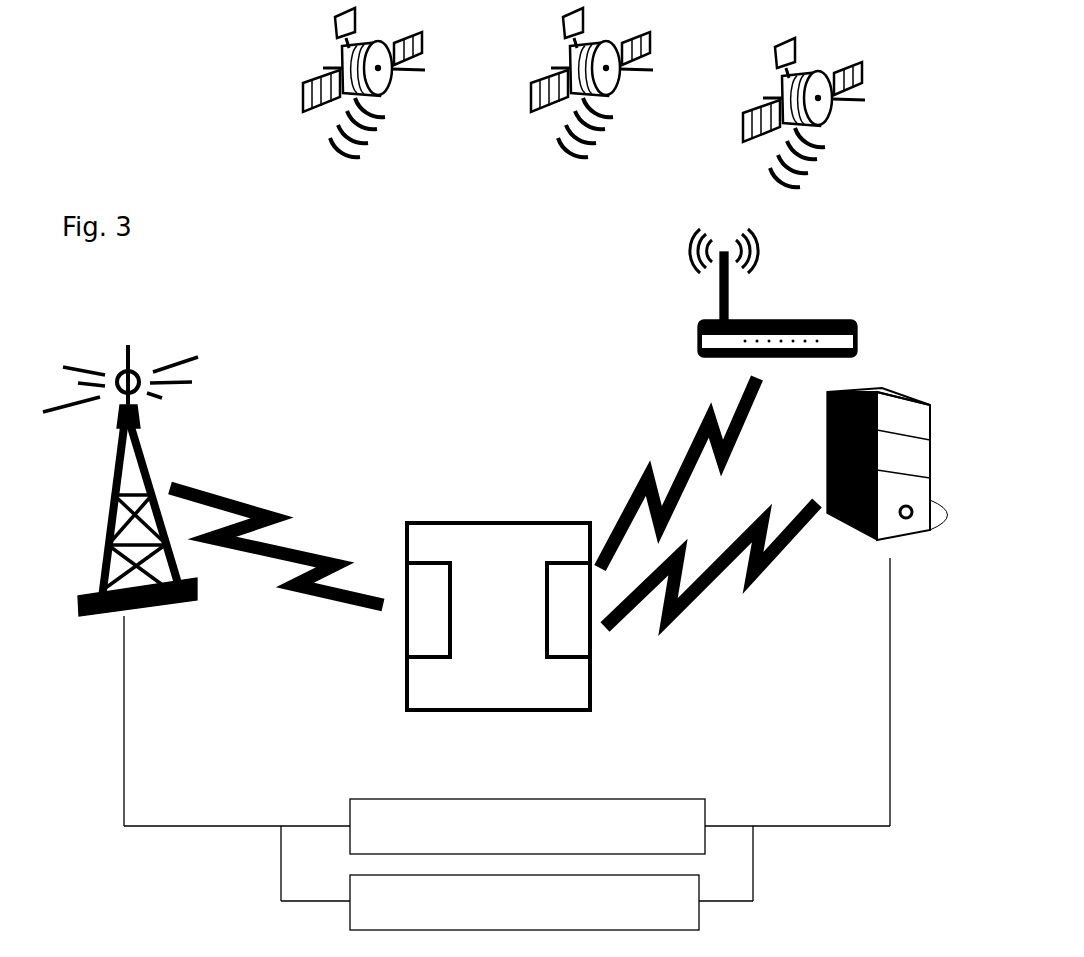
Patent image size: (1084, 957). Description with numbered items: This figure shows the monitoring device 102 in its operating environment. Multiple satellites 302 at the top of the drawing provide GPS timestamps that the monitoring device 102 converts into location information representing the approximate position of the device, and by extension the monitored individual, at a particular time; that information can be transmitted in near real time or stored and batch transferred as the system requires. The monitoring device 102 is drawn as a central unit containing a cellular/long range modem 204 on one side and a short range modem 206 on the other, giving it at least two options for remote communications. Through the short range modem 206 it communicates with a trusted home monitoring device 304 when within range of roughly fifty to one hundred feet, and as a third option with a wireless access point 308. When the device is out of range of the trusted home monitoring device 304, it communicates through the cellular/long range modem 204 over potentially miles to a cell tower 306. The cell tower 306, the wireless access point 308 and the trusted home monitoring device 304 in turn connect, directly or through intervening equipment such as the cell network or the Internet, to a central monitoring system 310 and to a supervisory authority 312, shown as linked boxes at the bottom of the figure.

The monitoring device 102 is at (482, 524).
The cellular/long range modem 204 is at (405, 583).
The short range modem 206 is at (567, 610).
The satellites 302 is at (297, 125).
The trusted home monitoring device 304 is at (828, 537).
The cell tower 306 is at (158, 640).
The wireless access point 308 is at (682, 318).
The central monitoring system 310 is at (527, 826).
The supervisory authority 312 is at (524, 902).